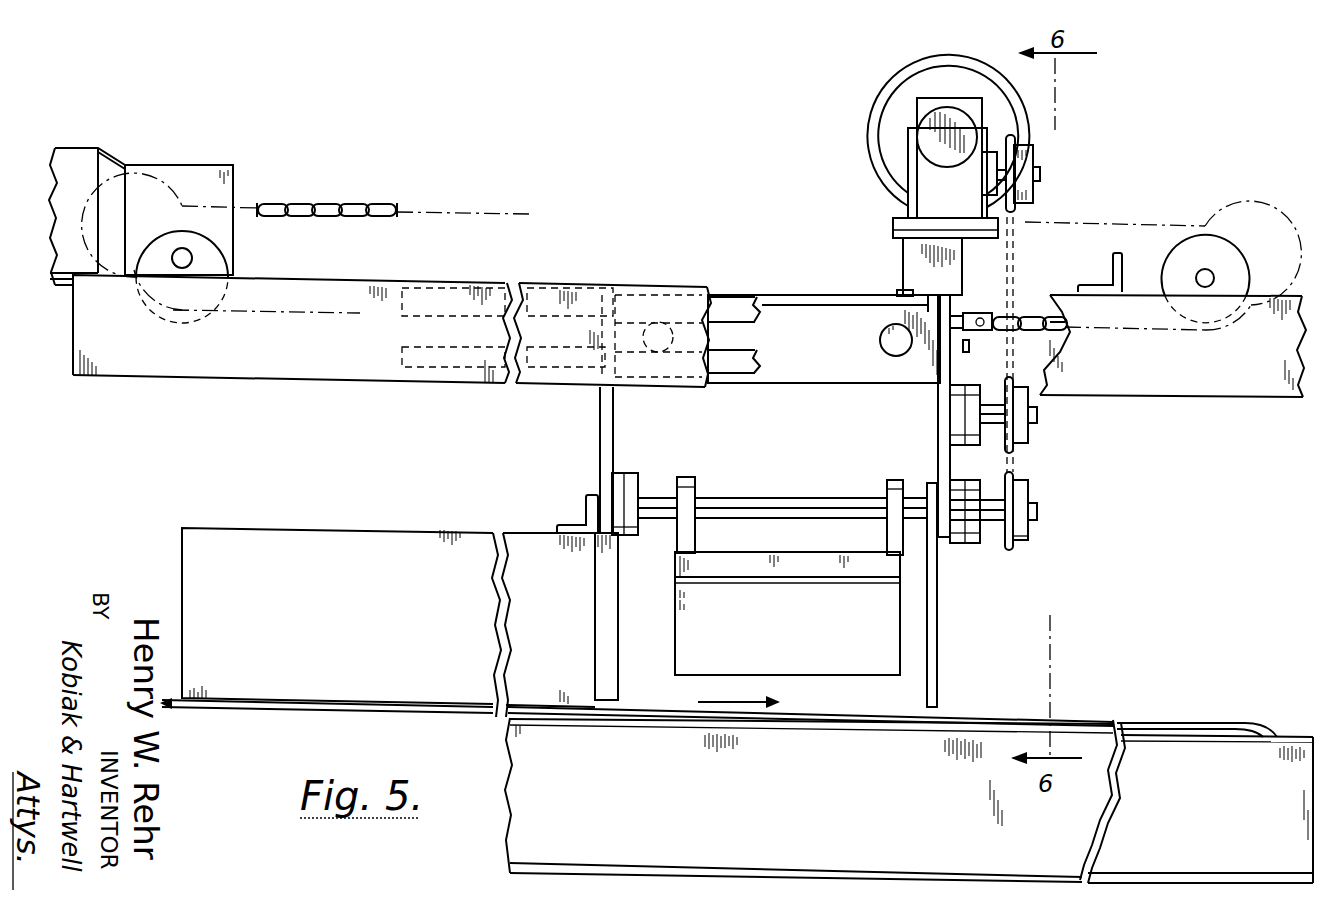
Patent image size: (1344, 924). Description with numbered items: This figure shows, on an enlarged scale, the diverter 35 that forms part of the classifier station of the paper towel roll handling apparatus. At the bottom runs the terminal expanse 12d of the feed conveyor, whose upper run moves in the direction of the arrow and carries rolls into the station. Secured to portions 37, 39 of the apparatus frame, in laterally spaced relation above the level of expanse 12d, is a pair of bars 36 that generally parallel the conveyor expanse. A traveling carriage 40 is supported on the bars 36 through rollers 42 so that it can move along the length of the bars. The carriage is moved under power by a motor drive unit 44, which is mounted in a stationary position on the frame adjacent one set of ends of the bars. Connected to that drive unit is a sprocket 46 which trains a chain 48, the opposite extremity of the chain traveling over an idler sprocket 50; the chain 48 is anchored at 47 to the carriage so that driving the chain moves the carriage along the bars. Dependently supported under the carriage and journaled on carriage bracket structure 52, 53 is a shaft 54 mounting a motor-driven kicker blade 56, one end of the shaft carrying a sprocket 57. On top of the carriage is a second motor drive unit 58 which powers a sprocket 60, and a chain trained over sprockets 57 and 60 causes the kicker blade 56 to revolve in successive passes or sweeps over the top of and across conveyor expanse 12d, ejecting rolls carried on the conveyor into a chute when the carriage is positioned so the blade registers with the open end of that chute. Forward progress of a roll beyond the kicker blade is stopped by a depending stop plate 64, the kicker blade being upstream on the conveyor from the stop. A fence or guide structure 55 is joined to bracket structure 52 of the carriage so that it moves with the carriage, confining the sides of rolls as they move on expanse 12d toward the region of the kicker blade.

The feed conveyor expanse 12d is at (848, 722).
The diverter 35 is at (663, 152).
The bars 36 is at (742, 318).
The frame portion 37 is at (1186, 373).
The frame portion 39 is at (1043, 353).
The traveling carriage 40 is at (814, 292).
The rollers 42 is at (888, 353).
The motor drive unit 44 is at (82, 165).
The sprocket 46 is at (216, 236).
The chain anchor 47 is at (977, 337).
The chain 48 is at (284, 204).
The idler sprocket 50 is at (1176, 244).
The carriage bracket structure 52 is at (616, 434).
The carriage bracket structure 53 is at (938, 452).
The shaft 54 is at (791, 497).
The fence or guide structure 55 is at (528, 540).
The kicker blade 56 is at (806, 650).
The sprocket 57 is at (1006, 548).
The motor drive unit 58 is at (872, 160).
The sprocket 60 is at (1036, 193).
The stop plate 64 is at (937, 635).